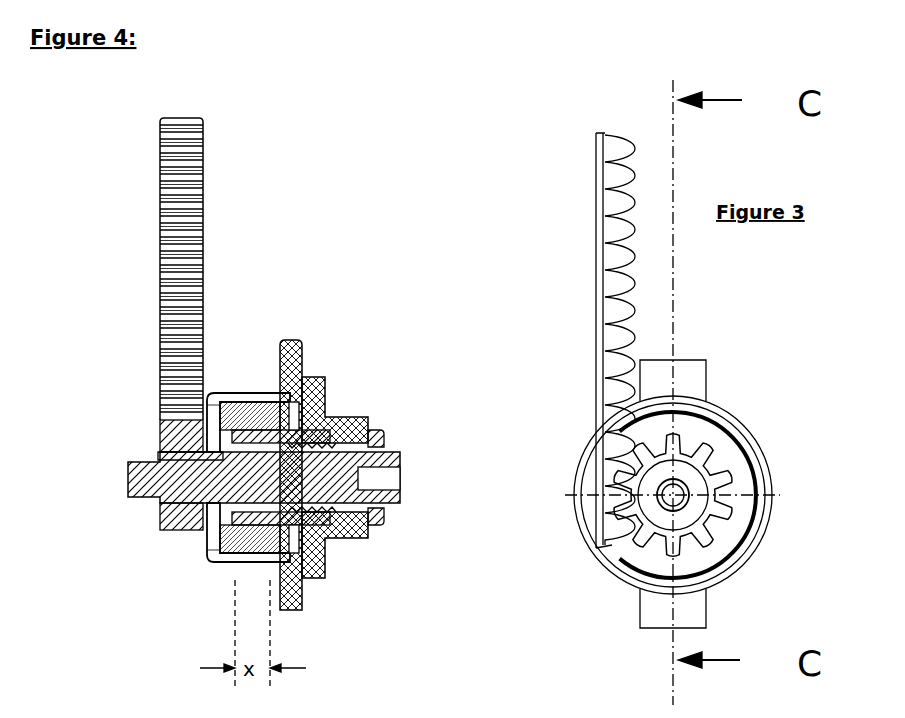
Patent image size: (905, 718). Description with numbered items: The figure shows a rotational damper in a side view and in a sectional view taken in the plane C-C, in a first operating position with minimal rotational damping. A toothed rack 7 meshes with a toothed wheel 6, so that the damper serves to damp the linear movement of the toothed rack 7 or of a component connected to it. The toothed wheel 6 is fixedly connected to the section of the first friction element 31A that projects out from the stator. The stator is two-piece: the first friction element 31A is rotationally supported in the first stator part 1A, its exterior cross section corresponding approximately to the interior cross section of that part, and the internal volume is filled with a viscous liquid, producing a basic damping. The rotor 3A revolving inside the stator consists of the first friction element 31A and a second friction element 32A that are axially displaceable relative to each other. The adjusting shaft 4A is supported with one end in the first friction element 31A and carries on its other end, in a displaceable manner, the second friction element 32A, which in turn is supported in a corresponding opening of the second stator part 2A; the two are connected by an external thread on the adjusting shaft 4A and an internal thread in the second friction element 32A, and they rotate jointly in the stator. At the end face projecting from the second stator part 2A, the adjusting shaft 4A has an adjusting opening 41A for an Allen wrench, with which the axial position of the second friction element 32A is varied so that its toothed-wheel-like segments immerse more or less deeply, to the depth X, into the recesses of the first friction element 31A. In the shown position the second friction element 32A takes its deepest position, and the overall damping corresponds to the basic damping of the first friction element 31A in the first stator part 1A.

In FIG. 4, the toothed rack 7 is at (190, 204).
In FIG. 3, the toothed rack 7 is at (613, 207).
In FIG. 4, the toothed wheel 6 is at (175, 435).
In FIG. 3, the toothed wheel 6 is at (727, 508).
In FIG. 4, the first stator part 1A is at (300, 347).
In FIG. 3, the first stator part 1A is at (763, 455).
In FIG. 4, the second stator part 2A is at (332, 397).
In FIG. 4, the rotor 3A is at (237, 565).
In FIG. 4, the first friction element 31A is at (252, 405).
In FIG. 4, the second friction element 32A is at (383, 447).
In FIG. 4, the adjusting shaft 4A is at (400, 460).
In FIG. 3, the adjusting shaft 4A is at (682, 502).
In FIG. 4, the adjusting opening 41A is at (403, 485).